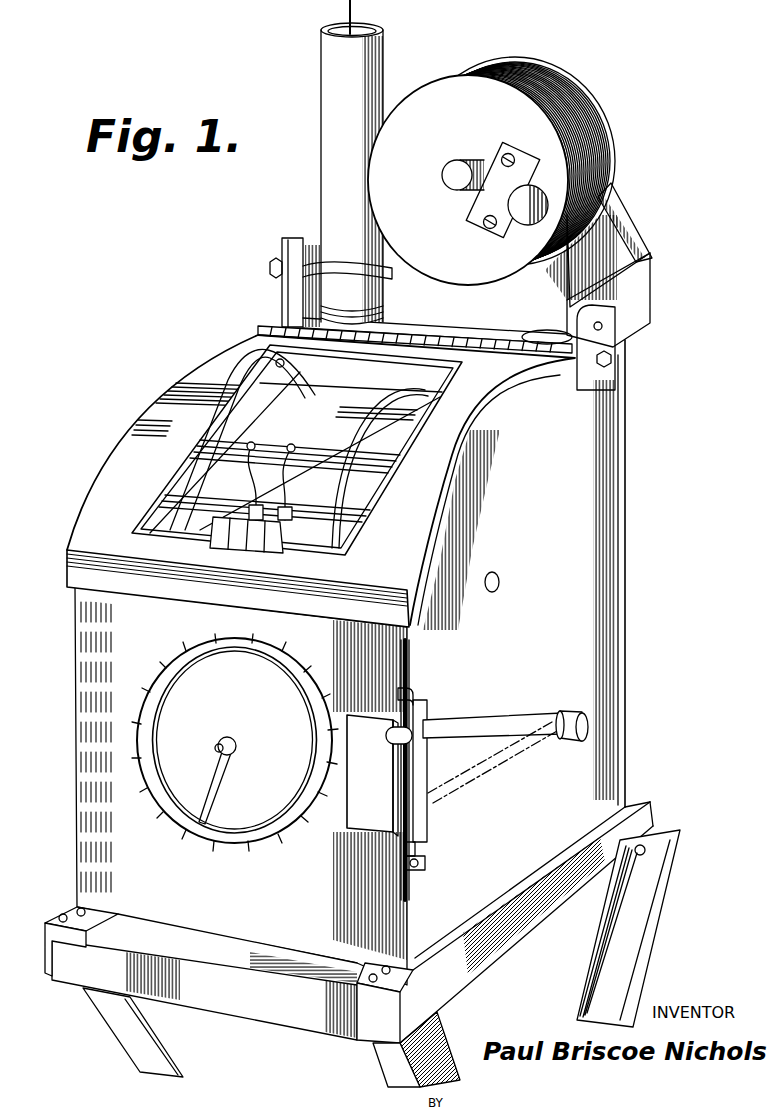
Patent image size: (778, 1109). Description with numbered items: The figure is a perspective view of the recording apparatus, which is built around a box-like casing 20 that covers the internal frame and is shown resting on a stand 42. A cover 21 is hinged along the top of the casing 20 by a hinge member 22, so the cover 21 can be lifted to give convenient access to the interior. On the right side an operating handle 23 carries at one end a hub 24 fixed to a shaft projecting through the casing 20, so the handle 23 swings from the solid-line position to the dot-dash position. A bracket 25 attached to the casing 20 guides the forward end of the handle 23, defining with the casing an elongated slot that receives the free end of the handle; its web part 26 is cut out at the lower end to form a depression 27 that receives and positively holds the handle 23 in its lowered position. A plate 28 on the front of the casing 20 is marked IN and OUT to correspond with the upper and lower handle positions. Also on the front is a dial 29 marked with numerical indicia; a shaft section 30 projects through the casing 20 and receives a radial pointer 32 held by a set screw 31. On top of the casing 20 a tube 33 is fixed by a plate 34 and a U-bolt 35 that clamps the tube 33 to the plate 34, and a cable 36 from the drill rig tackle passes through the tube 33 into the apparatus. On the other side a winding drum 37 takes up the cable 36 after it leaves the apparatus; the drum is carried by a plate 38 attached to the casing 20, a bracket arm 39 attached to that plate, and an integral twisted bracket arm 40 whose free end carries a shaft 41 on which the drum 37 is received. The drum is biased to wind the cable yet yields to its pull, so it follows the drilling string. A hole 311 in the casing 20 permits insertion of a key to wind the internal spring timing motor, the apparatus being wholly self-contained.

The casing 20 is at (622, 535).
The cover 21 is at (135, 438).
The hinge member 22 is at (262, 328).
The operating handle 23 is at (466, 728).
The hub 24 is at (588, 733).
The bracket 25 is at (418, 710).
The web part 26 is at (422, 770).
The depression 27 is at (420, 820).
The plate 28 is at (348, 798).
The dial 29 is at (283, 670).
The shaft section 30 is at (230, 740).
The set screw 31 is at (216, 748).
The radial pointer 32 is at (222, 780).
The tube 33 is at (323, 56).
The plate 34 is at (284, 297).
The U-bolt 35 is at (400, 284).
The cable 36 is at (349, 16).
The winding drum 37 is at (525, 62).
The plate 38 is at (600, 378).
The bracket arm 39 is at (652, 293).
The twisted bracket arm 40 is at (620, 232).
The shaft 41 is at (450, 170).
The stand 42 is at (510, 938).
The hole 311 is at (500, 581).